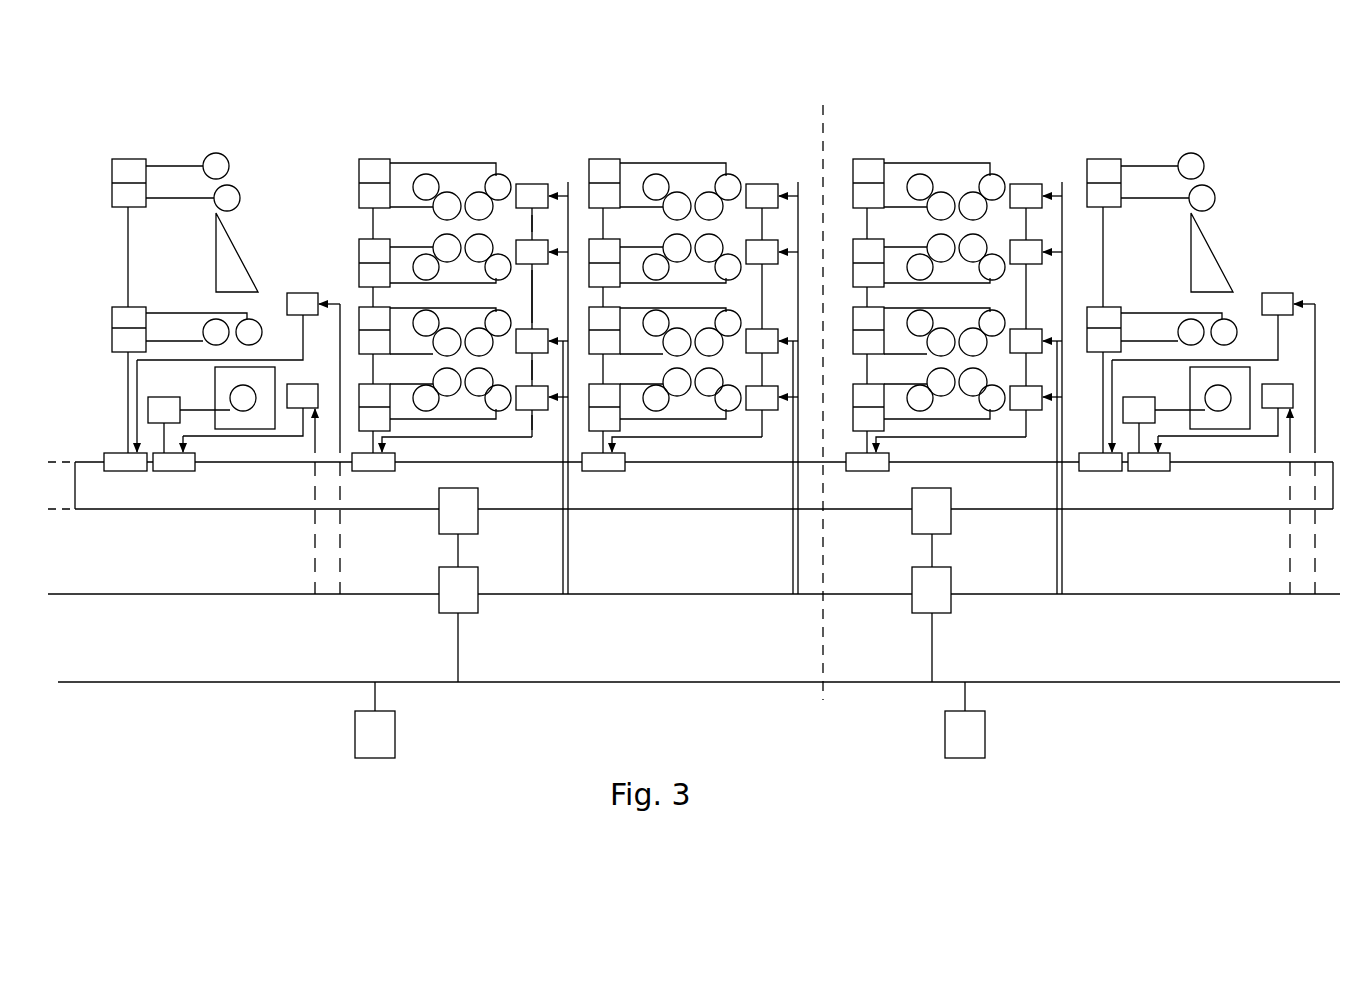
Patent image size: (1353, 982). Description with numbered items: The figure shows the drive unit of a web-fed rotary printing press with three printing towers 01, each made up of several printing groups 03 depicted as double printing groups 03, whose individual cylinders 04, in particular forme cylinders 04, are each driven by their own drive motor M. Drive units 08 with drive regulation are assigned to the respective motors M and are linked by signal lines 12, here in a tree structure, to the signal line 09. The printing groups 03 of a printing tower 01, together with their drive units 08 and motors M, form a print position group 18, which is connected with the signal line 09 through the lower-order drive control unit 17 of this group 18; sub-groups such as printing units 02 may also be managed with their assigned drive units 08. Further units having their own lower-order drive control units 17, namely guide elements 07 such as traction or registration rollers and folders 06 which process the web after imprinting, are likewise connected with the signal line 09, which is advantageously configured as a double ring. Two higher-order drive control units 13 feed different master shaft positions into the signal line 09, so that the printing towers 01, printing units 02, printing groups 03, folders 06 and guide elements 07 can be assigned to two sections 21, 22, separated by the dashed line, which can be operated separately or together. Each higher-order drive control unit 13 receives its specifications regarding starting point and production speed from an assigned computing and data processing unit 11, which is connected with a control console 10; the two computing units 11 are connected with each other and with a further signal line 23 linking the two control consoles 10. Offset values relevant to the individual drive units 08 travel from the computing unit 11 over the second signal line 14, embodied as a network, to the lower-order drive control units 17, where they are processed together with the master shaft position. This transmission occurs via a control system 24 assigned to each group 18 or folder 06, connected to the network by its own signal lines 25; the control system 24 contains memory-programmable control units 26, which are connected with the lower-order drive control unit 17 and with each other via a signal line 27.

The printing tower 01 is at (441, 137).
The printing unit 02 is at (522, 237).
The printing group 03 is at (427, 209).
The cylinder 04 is at (425, 176).
The folder 06 is at (231, 387).
The guide element 07 is at (243, 172).
The drive unit 08 is at (386, 180).
The signal line 09 is at (672, 510).
The control console 10 is at (388, 746).
The computing and data processing unit 11 is at (471, 601).
The signal line 12 is at (372, 227).
The higher-order drive control unit 13 is at (471, 522).
The second signal line 14 is at (705, 593).
The lower-order drive control unit 17 is at (143, 465).
The print position group 18 is at (488, 137).
The section 21 is at (564, 76).
The section 22 is at (1056, 76).
The further signal line 23 is at (578, 683).
The control system 24 is at (539, 268).
The signal line 25 is at (563, 533).
The control unit 26 is at (528, 255).
The signal line 27 is at (492, 440).